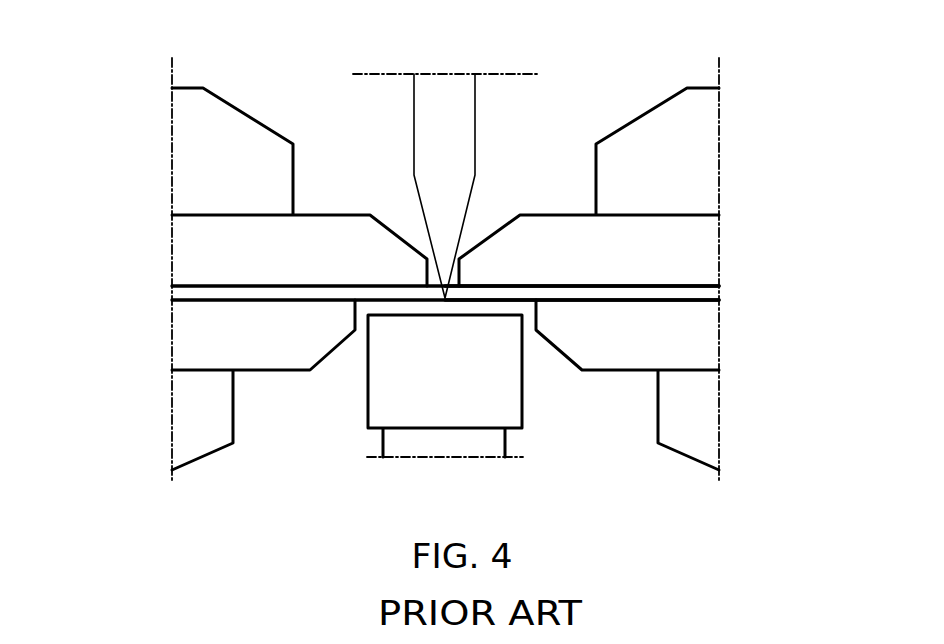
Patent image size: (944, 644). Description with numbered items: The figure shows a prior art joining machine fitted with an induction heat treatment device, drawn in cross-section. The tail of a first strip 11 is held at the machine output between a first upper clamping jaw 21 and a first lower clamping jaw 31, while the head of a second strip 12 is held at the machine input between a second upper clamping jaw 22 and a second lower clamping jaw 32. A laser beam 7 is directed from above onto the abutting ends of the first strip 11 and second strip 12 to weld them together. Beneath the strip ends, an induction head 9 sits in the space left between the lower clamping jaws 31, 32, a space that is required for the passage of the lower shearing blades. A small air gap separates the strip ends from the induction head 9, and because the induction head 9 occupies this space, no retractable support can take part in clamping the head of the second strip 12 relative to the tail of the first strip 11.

The second upper clamping jaw 22 is at (224, 158).
The first upper clamping jaw 21 is at (683, 158).
The laser beam 7 is at (448, 138).
The second strip 12 is at (160, 294).
The first strip 11 is at (731, 294).
The second lower clamping jaw 32 is at (191, 404).
The first lower clamping jaw 31 is at (697, 404).
The induction head 9 is at (449, 404).